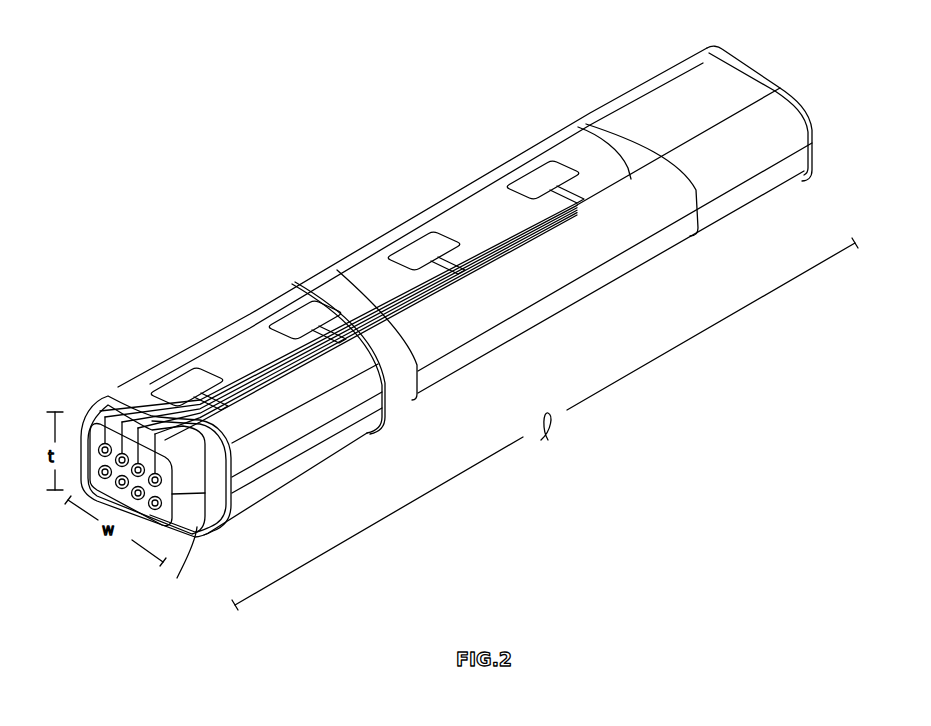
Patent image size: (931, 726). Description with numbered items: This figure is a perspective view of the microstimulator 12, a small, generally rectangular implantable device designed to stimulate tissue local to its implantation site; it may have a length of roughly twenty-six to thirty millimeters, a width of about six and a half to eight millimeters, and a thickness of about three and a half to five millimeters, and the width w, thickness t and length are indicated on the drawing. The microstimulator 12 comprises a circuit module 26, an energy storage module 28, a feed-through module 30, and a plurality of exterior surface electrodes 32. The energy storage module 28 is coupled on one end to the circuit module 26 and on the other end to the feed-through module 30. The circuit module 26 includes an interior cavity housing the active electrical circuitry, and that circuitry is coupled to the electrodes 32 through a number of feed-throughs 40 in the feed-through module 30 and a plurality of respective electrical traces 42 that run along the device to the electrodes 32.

The microstimulator 12 is at (347, 120).
The circuit module 26 is at (814, 182).
The energy storage module 28 is at (694, 247).
The feed-through module 30 is at (402, 423).
The exterior surface electrodes 32 is at (185, 381).
The feed-throughs 40 is at (145, 515).
The electrical traces 42 is at (265, 375).